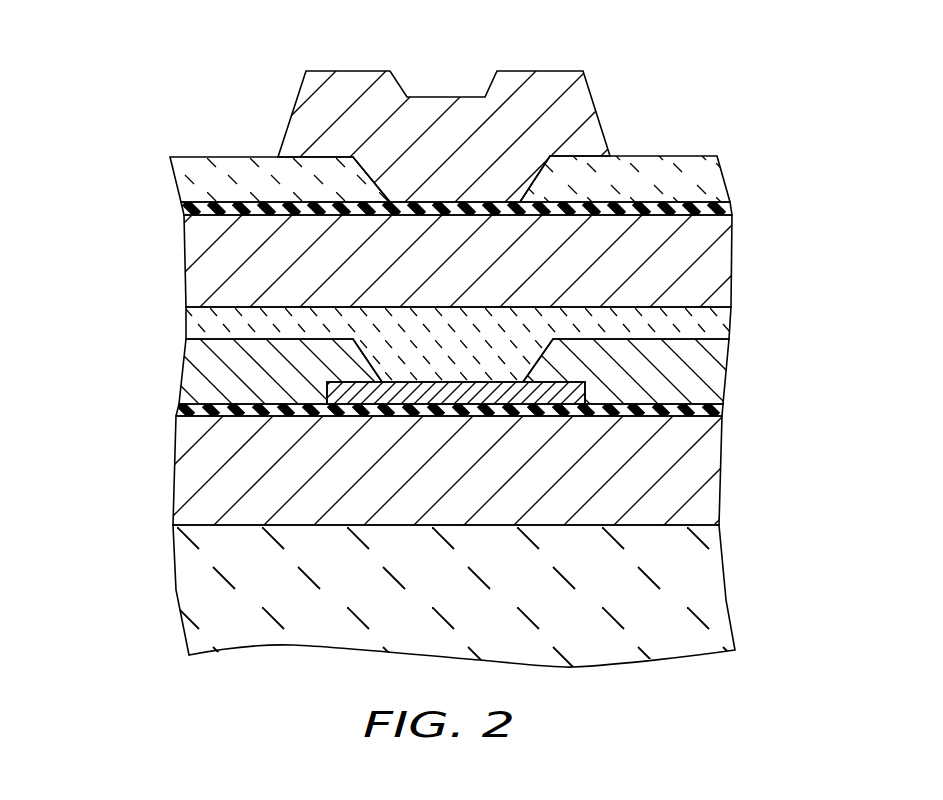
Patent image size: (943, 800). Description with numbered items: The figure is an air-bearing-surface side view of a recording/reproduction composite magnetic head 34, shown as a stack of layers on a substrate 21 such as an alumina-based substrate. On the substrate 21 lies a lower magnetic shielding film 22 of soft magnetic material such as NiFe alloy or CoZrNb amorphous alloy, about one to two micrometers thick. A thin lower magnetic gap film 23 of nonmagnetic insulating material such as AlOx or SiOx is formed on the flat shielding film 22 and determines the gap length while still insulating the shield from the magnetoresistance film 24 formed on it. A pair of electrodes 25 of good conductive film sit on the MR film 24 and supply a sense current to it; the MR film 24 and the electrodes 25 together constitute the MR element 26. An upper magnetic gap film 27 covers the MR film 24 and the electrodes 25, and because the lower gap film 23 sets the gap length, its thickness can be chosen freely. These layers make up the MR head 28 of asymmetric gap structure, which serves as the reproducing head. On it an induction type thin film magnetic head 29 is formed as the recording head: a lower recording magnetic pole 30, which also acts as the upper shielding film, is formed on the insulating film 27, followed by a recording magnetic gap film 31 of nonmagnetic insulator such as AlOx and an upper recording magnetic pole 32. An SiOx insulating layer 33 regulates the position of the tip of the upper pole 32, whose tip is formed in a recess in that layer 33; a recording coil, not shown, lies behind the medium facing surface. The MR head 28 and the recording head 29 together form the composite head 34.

The substrate 21 is at (710, 605).
The lower magnetic shielding film 22 is at (697, 503).
The lower magnetic gap film 23 is at (710, 408).
The magnetoresistance film 24 is at (563, 395).
The pair of electrodes 25 is at (197, 380).
The MR element 26 is at (799, 337).
The upper magnetic gap film 27 is at (720, 320).
The MR head 28 is at (855, 308).
The induction type thin film magnetic head 29 is at (92, 68).
The lower recording magnetic pole 30 is at (200, 240).
The recording magnetic gap film 31 is at (187, 207).
The upper recording magnetic pole 32 is at (315, 80).
The SiOx insulating layer 33 is at (197, 168).
The recording/reproduction composite magnetic head 34 is at (667, 100).